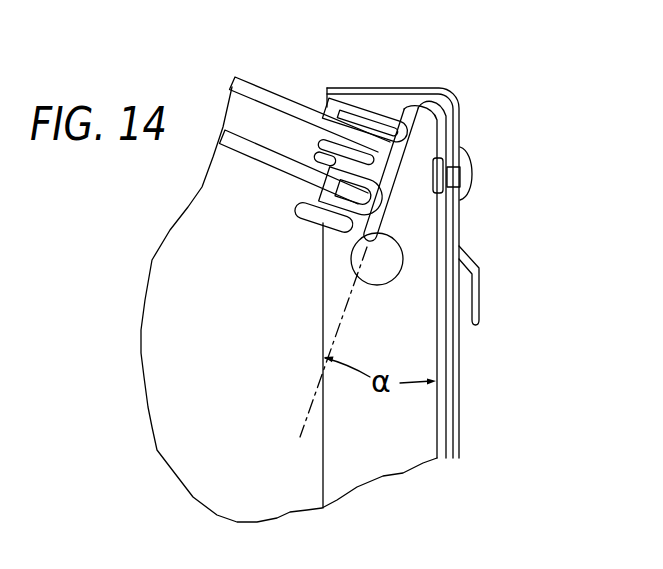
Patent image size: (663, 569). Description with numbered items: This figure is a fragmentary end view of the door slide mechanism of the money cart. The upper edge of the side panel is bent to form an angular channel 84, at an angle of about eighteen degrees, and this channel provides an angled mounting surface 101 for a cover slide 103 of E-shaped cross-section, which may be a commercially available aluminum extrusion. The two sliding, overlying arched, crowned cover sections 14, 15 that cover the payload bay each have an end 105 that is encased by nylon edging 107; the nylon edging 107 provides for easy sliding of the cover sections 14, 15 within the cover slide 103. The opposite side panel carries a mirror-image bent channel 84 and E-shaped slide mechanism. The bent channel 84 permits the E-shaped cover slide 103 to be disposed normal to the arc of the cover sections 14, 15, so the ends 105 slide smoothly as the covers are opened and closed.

The cover section 14 is at (265, 157).
The cover section 15 is at (252, 91).
The angular channel 84 is at (420, 151).
The angled mounting surface 101 is at (386, 198).
The cover slide 103 is at (330, 218).
The end 105 is at (345, 138).
The nylon edging 107 is at (385, 148).